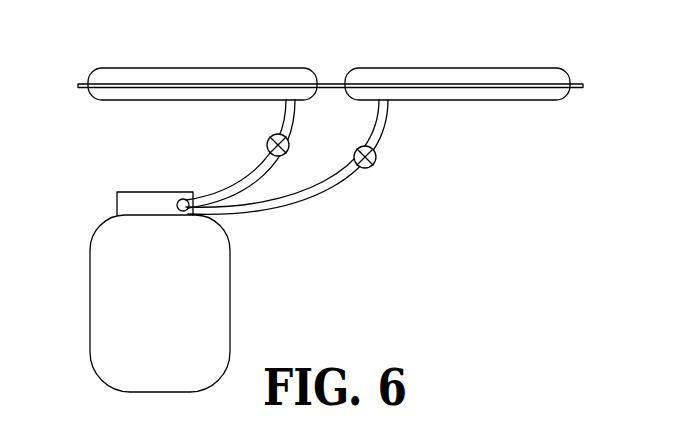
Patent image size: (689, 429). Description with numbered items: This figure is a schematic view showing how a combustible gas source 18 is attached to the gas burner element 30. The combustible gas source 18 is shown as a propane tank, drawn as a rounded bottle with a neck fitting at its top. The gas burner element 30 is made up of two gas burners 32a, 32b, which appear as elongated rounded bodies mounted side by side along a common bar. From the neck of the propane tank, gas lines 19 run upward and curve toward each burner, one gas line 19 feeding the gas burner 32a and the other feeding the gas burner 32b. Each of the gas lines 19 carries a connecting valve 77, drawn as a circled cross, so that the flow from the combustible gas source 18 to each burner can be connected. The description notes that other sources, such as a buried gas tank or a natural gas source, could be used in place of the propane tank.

The combustible gas source 18 is at (120, 278).
The gas lines 19 is at (243, 180).
The gas burner element 30 is at (331, 68).
The gas burner 32a is at (172, 68).
The gas burner 32b is at (490, 68).
The connecting valves 77 is at (291, 144).